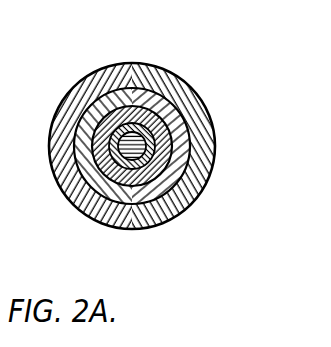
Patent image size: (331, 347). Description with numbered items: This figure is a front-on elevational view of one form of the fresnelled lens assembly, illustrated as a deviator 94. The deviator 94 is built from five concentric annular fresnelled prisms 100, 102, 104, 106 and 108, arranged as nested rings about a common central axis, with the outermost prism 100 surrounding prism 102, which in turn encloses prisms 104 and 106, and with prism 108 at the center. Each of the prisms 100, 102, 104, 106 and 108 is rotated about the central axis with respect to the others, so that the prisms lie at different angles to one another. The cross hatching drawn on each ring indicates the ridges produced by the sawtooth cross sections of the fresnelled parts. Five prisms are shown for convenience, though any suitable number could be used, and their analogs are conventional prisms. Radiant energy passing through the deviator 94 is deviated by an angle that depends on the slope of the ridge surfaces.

The deviator 94 is at (106, 64).
The concentric annular fresnelled prism 100 is at (167, 86).
The concentric annular fresnelled prism 102 is at (172, 130).
The concentric annular fresnelled prism 104 is at (166, 134).
The concentric annular fresnelled prism 106 is at (152, 150).
The concentric annular fresnelled prism 108 is at (160, 178).